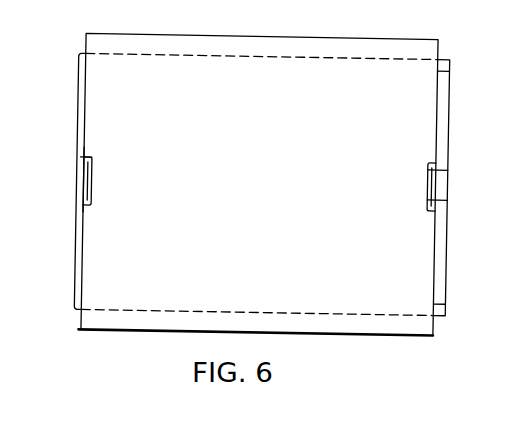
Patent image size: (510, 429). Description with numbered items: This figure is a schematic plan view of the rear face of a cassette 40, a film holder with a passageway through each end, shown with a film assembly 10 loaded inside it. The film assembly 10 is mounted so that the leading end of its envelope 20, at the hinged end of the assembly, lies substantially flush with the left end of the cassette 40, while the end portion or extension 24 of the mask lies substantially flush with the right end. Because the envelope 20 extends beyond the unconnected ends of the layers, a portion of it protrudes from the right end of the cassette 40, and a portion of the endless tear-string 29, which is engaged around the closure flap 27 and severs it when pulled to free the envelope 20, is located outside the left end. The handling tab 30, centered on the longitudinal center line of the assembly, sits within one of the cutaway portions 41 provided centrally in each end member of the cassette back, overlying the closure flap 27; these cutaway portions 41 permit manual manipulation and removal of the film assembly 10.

The film assembly 10 is at (251, 56).
The envelope 20 is at (452, 107).
The extension 24 is at (437, 167).
The closure flap 27 is at (84, 161).
The tear-string 29 is at (78, 87).
The handling tab 30 is at (93, 182).
The cassette 40 is at (122, 333).
The cutaway portions 41 is at (89, 158).